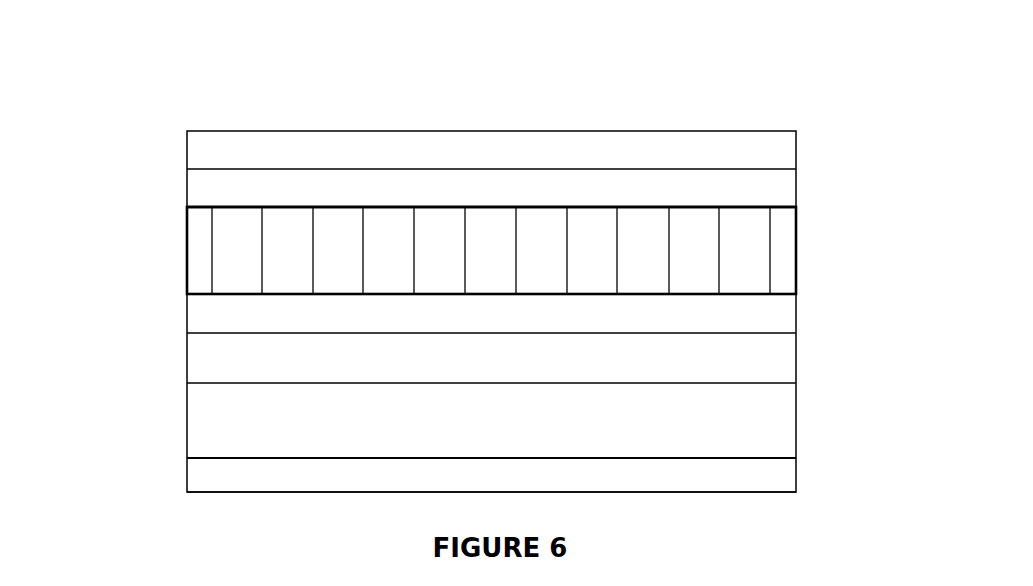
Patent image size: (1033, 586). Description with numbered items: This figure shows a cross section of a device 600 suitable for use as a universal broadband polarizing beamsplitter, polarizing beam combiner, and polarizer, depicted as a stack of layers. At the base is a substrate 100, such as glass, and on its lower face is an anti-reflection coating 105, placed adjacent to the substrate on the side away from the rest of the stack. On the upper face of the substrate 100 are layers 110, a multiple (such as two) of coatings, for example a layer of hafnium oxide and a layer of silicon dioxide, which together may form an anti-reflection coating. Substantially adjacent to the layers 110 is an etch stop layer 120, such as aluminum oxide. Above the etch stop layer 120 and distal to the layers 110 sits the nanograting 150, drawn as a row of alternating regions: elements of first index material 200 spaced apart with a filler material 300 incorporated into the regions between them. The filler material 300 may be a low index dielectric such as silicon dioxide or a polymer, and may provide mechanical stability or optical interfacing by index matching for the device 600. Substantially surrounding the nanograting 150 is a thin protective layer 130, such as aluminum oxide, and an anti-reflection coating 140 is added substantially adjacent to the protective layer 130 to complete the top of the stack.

The device 600 is at (490, 256).
The anti-reflection coating 140 is at (491, 152).
The protective layer 130 is at (491, 190).
The nanograting 150 is at (563, 173).
The first index material 200 is at (441, 227).
The filler material 300 is at (586, 231).
The etch stop layer 120 is at (491, 315).
The layers 110 is at (491, 361).
The substrate 100 is at (491, 428).
The anti-reflection coating 105 is at (491, 475).